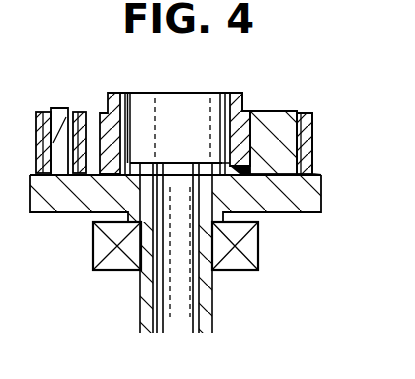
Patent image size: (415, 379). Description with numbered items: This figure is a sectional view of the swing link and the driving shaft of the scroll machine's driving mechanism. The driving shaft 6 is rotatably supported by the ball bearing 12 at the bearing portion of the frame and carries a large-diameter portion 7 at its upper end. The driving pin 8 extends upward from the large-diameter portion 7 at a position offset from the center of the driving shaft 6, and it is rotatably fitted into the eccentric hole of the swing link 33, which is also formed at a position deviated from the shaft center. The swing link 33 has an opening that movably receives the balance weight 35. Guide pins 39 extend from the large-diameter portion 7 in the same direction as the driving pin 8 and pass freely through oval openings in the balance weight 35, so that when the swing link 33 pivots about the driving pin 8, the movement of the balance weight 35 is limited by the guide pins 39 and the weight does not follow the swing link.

The driving shaft 6 is at (208, 310).
The large-diameter portion 7 is at (62, 203).
The driving pin 8 is at (275, 118).
The ball bearing 12 is at (258, 242).
The swing link 33 is at (127, 117).
The balance weight 35 is at (82, 112).
The guide pins 39 is at (60, 113).